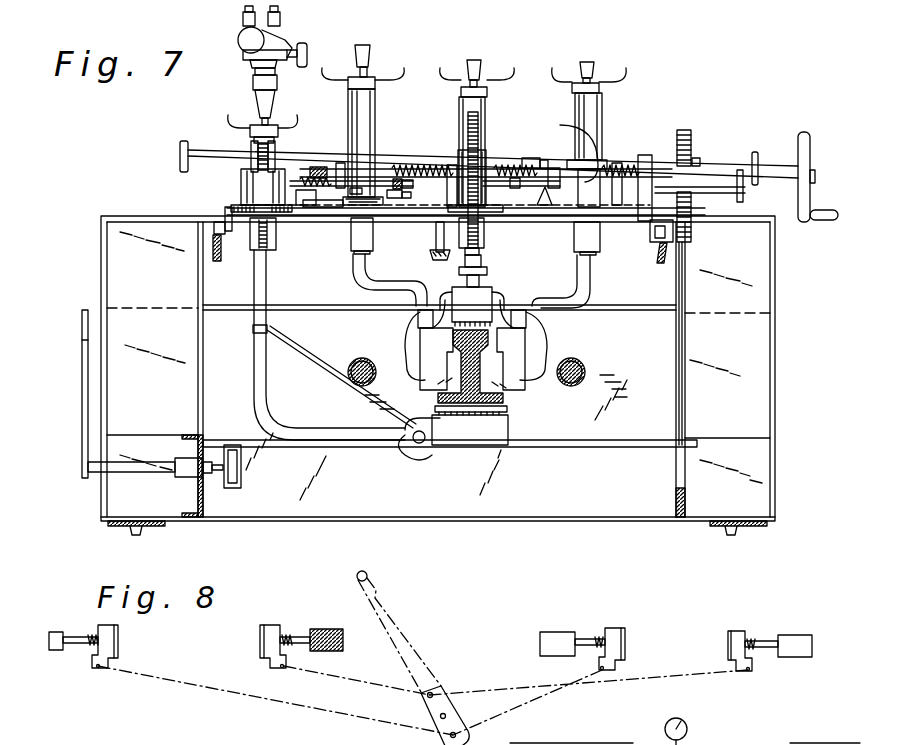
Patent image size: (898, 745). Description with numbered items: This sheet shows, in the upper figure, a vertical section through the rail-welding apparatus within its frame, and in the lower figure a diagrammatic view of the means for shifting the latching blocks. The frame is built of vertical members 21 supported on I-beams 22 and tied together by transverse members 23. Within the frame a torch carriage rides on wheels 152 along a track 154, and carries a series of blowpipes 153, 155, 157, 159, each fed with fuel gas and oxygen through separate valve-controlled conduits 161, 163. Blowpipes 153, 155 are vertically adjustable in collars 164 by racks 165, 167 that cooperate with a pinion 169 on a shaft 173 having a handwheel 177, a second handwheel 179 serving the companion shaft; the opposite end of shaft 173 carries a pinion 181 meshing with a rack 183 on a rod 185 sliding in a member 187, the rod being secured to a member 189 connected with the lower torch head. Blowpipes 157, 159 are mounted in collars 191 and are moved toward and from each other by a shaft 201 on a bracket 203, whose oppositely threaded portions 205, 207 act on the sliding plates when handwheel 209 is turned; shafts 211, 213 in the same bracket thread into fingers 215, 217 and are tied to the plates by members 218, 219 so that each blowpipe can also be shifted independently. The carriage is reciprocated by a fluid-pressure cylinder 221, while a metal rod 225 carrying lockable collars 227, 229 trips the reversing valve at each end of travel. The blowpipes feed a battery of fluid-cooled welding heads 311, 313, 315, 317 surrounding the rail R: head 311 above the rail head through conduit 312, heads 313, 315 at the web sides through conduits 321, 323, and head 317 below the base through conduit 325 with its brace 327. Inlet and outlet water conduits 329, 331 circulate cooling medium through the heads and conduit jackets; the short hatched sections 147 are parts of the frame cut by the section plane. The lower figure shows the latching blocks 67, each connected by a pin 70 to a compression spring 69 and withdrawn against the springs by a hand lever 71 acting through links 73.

In FIG. 7, the vertical members 21 is at (101, 262).
In FIG. 7, the I-beams 22 is at (145, 529).
In FIG. 7, the transverse members 23 is at (400, 521).
In FIG. 7, the hand lever 71 is at (82, 318).
In FIG. 8, the hand lever 71 is at (412, 648).
In FIG. 7, the links 73 is at (240, 460).
In FIG. 8, the links 73 is at (258, 696).
In FIG. 8, the latching blocks 67 is at (118, 642).
In FIG. 8, the compression springs 69 is at (338, 628).
In FIG. 8, the pin 70 is at (80, 645).
In FIG. 7, the guide rod 147 is at (577, 360).
In FIG. 7, the wheels 152 is at (224, 217).
In FIG. 7, the blowpipe 153 is at (254, 143).
In FIG. 7, the track 154 is at (218, 260).
In FIG. 7, the blowpipe 155 is at (486, 122).
In FIG. 7, the blowpipe 157 is at (348, 121).
In FIG. 7, the blowpipe 159 is at (575, 106).
In FIG. 7, the valve-controlled conduit 161 is at (243, 20).
In FIG. 7, the valve-controlled conduit 163 is at (280, 17).
In FIG. 7, the collars 164 is at (240, 190).
In FIG. 7, the rack 165 is at (268, 236).
In FIG. 7, the rack 167 is at (480, 145).
In FIG. 7, the pinion 169 is at (250, 168).
In FIG. 7, the shaft 173 is at (303, 156).
In FIG. 7, the handwheel 177 is at (180, 156).
In FIG. 7, the handwheel 179 is at (755, 185).
In FIG. 7, the pinion 181 is at (696, 158).
In FIG. 7, the rack 183 is at (700, 125).
In FIG. 7, the rod 185 is at (686, 288).
In FIG. 7, the member 187 is at (695, 205).
In FIG. 7, the member 189 is at (585, 450).
In FIG. 7, the collars 191 is at (339, 165).
In FIG. 7, the shaft 201 is at (452, 166).
In FIG. 7, the bracket 203 is at (647, 155).
In FIG. 7, the threaded portion 205 is at (418, 173).
In FIG. 7, the threaded portion 207 is at (554, 166).
In FIG. 7, the handwheel 209 is at (800, 154).
In FIG. 7, the shaft 211 is at (501, 194).
In FIG. 7, the shaft 213 is at (718, 160).
In FIG. 7, the finger 215 is at (365, 204).
In FIG. 7, the finger 217 is at (570, 140).
In FIG. 7, the member 218 is at (414, 198).
In FIG. 7, the member 219 is at (543, 205).
In FIG. 8, the fluid-pressure operated cylinder 221 is at (632, 733).
In FIG. 7, the metal rod 225 is at (432, 258).
In FIG. 8, the collar 227 is at (696, 731).
In FIG. 8, the collar 229 is at (809, 731).
In FIG. 7, the welding head 311 is at (492, 290).
In FIG. 7, the water-jacketed conduit 312 is at (480, 268).
In FIG. 7, the welding head 313 is at (420, 345).
In FIG. 7, the welding head 315 is at (520, 397).
In FIG. 7, the welding head 317 is at (470, 446).
In FIG. 7, the water-jacketed conduit 321 is at (352, 278).
In FIG. 7, the water-jacketed conduit 323 is at (590, 268).
In FIG. 7, the water-jacketed conduit 325 is at (266, 405).
In FIG. 7, the brace 327 is at (330, 352).
In FIG. 7, the inlet water conduit 329 is at (240, 126).
In FIG. 7, the outlet water conduit 331 is at (540, 362).
In FIG. 7, the rail R is at (500, 402).